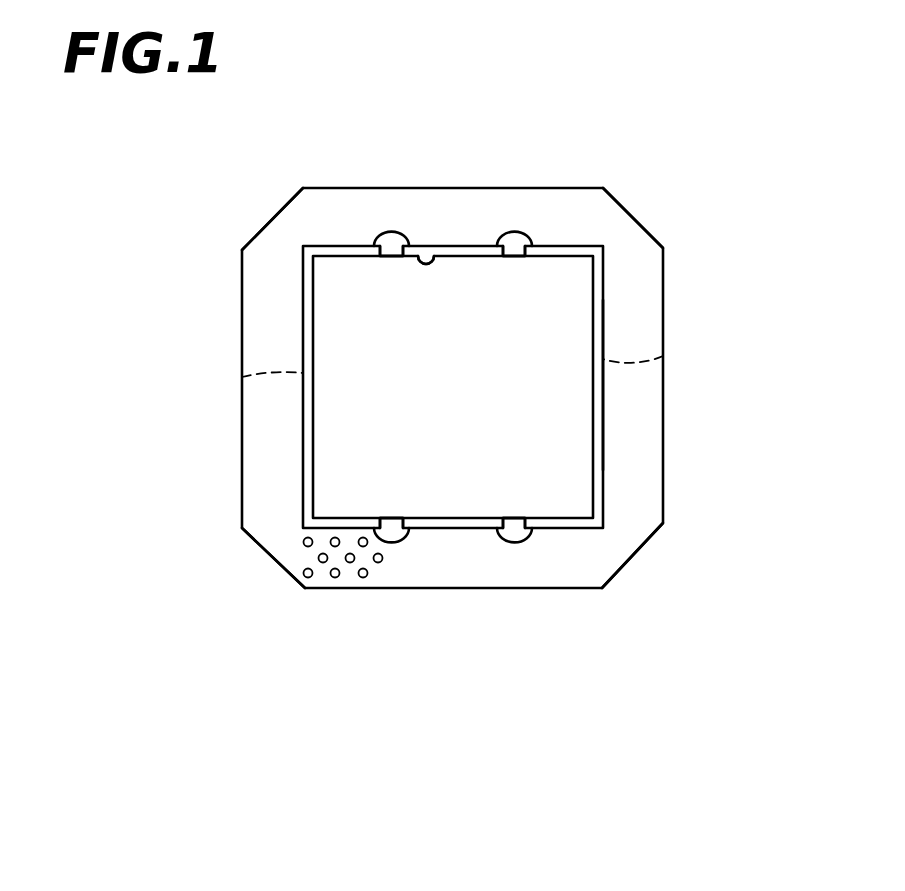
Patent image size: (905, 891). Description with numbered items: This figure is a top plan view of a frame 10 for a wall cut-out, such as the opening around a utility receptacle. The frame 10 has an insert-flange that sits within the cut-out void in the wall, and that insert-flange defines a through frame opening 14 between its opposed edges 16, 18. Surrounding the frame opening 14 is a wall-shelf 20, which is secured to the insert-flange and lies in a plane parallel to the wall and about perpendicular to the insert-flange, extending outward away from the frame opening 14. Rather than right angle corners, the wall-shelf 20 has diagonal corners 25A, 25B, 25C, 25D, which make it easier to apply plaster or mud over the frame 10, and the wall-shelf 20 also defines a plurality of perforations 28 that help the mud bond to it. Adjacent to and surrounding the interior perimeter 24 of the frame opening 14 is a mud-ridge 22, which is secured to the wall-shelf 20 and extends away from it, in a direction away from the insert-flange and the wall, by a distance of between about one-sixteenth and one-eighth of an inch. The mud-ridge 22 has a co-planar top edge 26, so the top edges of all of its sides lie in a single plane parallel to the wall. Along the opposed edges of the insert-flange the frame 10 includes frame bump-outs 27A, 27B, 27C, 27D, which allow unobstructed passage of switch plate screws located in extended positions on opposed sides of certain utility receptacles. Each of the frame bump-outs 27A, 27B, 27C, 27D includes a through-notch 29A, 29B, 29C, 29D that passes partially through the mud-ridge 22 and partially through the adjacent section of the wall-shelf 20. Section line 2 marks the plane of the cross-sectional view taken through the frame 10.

The frame 10 is at (693, 114).
The frame opening 14 is at (553, 404).
The edge of insert-flange 16 is at (242, 377).
The edge of insert-flange 18 is at (663, 356).
The wall-shelf 20 is at (633, 280).
The mud-ridge 22 is at (303, 280).
The interior perimeter 24 is at (420, 246).
The diagonal corner 25A is at (272, 218).
The diagonal corner 25B is at (633, 214).
The diagonal corner 25C is at (617, 577).
The diagonal corner 25D is at (272, 558).
The top edge 26 is at (603, 443).
The frame bump-out 27A is at (376, 242).
The frame bump-out 27B is at (516, 240).
The frame bump-out 27C is at (528, 537).
The frame bump-out 27D is at (403, 537).
The perforations 28 is at (363, 578).
The through-notch 29A is at (390, 262).
The through-notch 29B is at (514, 262).
The through-notch 29C is at (514, 512).
The through-notch 29D is at (388, 512).
The section line 2- 2 is at (240, 568).